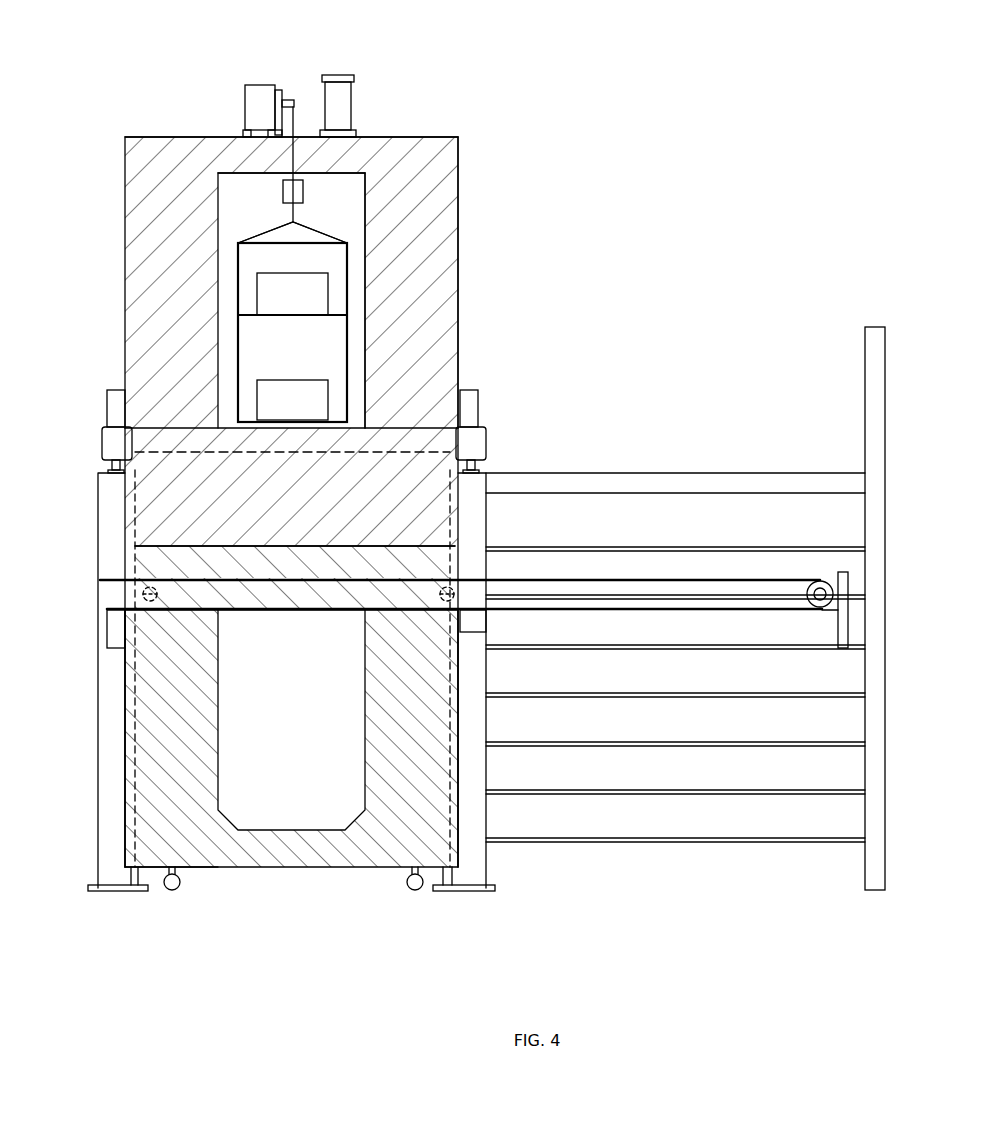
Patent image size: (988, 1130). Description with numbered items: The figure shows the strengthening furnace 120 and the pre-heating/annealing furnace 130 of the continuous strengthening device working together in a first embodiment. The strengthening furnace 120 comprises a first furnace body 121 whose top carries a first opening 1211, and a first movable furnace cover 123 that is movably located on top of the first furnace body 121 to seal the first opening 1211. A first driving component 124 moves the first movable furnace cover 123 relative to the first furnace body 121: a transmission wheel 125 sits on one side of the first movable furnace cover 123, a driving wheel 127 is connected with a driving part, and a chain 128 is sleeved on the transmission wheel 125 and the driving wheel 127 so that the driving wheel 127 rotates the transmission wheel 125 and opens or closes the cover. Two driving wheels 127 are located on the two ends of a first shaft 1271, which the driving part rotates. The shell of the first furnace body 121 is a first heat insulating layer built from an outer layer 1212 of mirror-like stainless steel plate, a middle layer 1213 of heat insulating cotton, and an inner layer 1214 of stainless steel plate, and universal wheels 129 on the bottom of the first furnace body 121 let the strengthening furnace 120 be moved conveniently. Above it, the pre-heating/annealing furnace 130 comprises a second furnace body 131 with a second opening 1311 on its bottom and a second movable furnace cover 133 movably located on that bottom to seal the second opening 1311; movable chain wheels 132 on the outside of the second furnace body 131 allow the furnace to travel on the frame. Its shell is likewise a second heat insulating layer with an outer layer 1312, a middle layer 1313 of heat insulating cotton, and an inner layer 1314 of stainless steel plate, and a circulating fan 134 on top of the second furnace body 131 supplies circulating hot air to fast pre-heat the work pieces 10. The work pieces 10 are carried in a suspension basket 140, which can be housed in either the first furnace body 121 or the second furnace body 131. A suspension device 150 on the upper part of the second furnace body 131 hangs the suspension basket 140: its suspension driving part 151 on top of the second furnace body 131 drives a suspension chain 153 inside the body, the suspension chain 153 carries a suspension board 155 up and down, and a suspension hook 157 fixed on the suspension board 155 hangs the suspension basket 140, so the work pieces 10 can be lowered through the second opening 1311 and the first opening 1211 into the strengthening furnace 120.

The work pieces 10 is at (328, 397).
The strengthening furnace 120 is at (259, 888).
The first furnace body 121 is at (468, 790).
The first opening 1211 is at (268, 619).
The outer layer 1212 is at (425, 755).
The middle layer 1213 is at (180, 788).
The inner layer 1214 is at (205, 740).
The first movable furnace cover 123 is at (96, 582).
The first driving component 124 is at (830, 392).
The transmission wheel 125 is at (453, 563).
The driving wheel 127 is at (822, 580).
The first shaft 1271 is at (813, 615).
The chain 128 is at (660, 580).
The universal wheels 129 is at (415, 892).
The pre-heating/annealing furnace 130 is at (478, 113).
The second furnace body 131 is at (468, 190).
The second opening 1311 is at (250, 536).
The outer layer 1312 is at (460, 243).
The middle layer 1313 is at (458, 157).
The inner layer 1314 is at (393, 160).
The movable chain wheels 132 is at (117, 443).
The second movable furnace cover 133 is at (170, 585).
The circulating fan 134 is at (340, 75).
The suspension basket 140 is at (347, 320).
The suspension device 150 is at (80, 82).
The suspension driving part 151 is at (245, 112).
The suspension chain 153 is at (293, 163).
The suspension board 155 is at (300, 198).
The suspension hook 157 is at (293, 220).